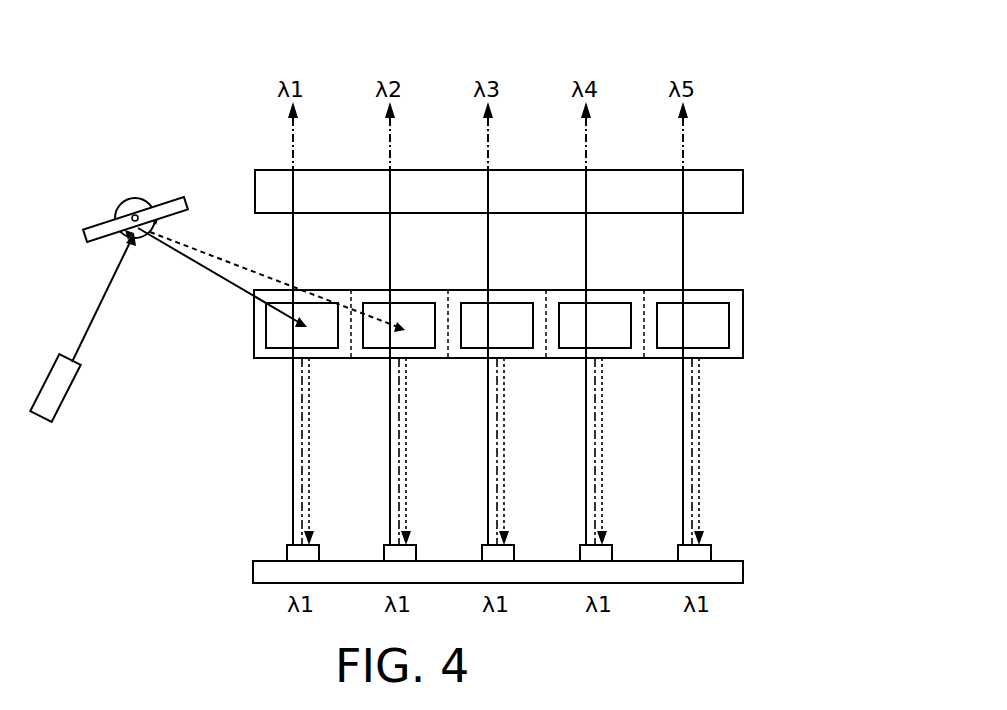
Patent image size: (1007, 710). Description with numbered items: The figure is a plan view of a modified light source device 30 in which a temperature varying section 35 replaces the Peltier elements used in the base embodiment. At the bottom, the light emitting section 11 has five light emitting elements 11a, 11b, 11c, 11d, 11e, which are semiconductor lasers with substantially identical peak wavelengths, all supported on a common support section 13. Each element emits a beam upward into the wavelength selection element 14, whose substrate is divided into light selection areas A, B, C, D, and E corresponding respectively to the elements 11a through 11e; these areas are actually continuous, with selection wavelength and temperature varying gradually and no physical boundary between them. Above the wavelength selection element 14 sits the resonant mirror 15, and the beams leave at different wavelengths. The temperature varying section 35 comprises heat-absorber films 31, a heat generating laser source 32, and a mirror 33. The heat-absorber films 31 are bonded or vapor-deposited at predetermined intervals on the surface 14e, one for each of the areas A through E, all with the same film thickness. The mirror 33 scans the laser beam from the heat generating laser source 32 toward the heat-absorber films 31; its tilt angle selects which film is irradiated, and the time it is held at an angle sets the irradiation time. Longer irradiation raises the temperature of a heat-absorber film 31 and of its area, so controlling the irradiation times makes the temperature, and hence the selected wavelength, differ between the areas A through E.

The light source device 30 is at (729, 77).
The temperature varying section 35 is at (184, 186).
The mirror 33 is at (98, 225).
The heat generating laser source 32 is at (70, 387).
The resonant mirror 15 is at (737, 185).
The wavelength selection element 14 is at (745, 307).
The surface 14e is at (733, 340).
The heat-absorber films 31 is at (326, 341).
The light emitting section 11 is at (243, 573).
The light emitting element 11a is at (320, 553).
The light emitting element 11b is at (417, 553).
The light emitting element 11c is at (515, 553).
The light emitting element 11d is at (613, 553).
The light emitting element 11e is at (711, 553).
The support section 13 is at (733, 572).
The area A is at (330, 297).
The area B is at (428, 297).
The area C is at (526, 297).
The area D is at (624, 297).
The area E is at (721, 297).